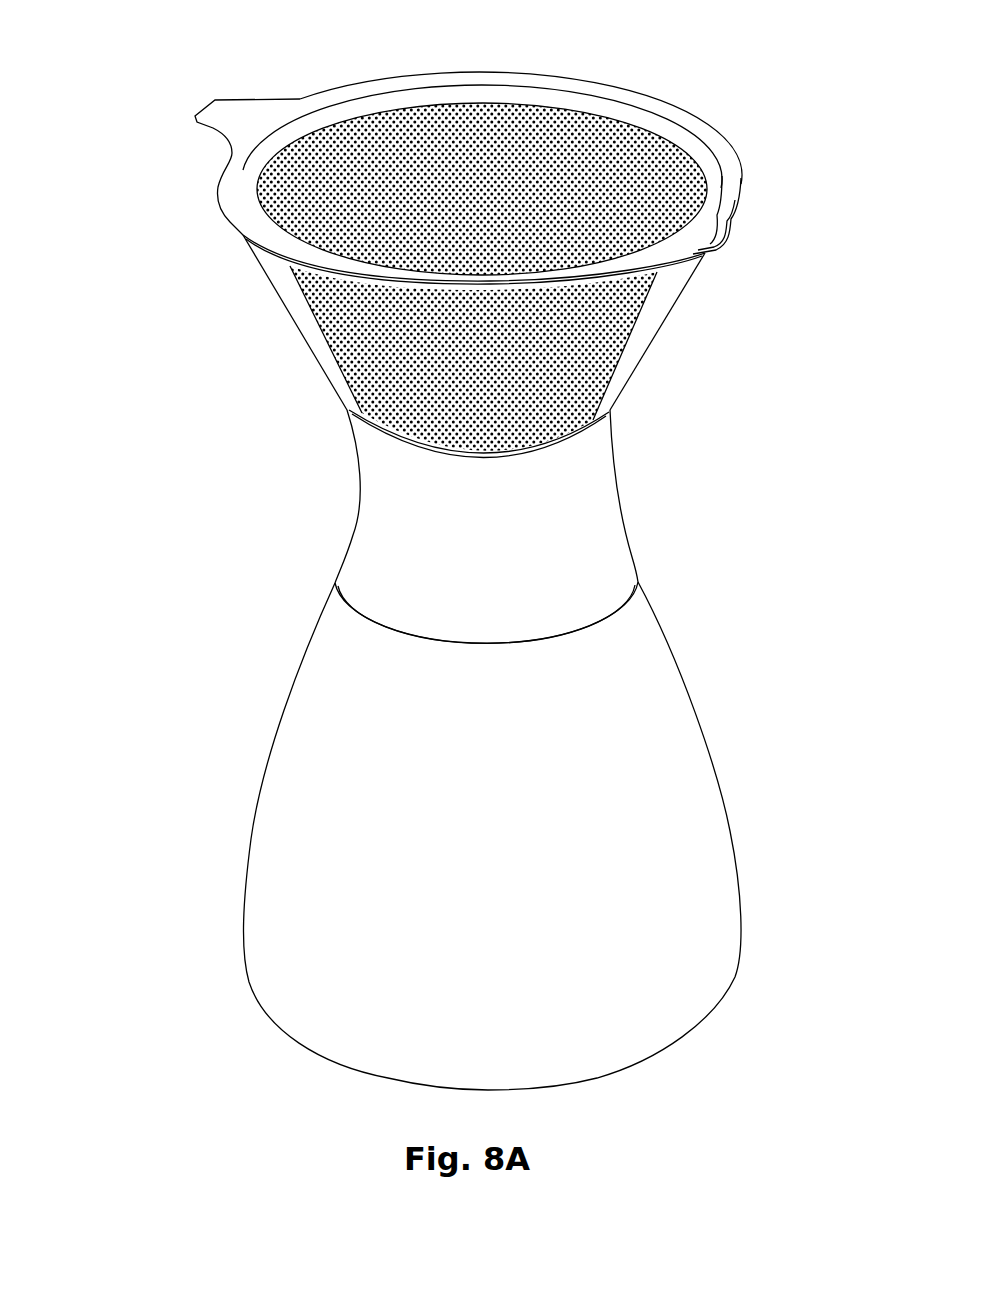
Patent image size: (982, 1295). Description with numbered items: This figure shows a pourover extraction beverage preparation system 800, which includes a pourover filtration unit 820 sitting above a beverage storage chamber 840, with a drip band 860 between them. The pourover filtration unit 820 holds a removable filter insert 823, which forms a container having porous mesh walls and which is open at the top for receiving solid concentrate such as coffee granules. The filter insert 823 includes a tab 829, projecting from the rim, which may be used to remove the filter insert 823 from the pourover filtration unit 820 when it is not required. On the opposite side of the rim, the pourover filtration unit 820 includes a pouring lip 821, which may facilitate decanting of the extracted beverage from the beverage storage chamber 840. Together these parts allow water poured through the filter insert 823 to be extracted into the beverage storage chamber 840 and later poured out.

The beverage preparation system 800 is at (138, 540).
The pourover filtration unit 820 is at (648, 343).
The pouring lip 821 is at (730, 223).
The removable filter insert 823 is at (370, 152).
The tab 829 is at (208, 122).
The beverage storage chamber 840 is at (652, 752).
The drip band 860 is at (557, 508).